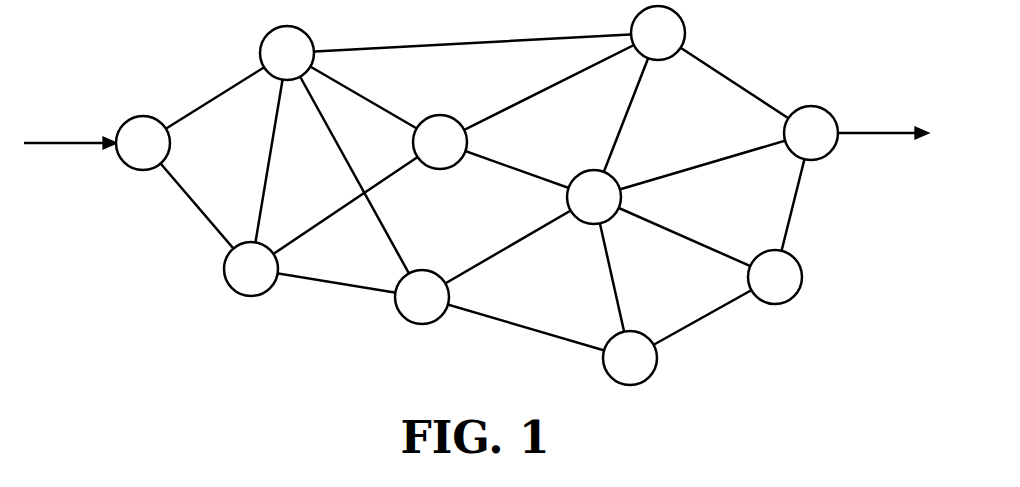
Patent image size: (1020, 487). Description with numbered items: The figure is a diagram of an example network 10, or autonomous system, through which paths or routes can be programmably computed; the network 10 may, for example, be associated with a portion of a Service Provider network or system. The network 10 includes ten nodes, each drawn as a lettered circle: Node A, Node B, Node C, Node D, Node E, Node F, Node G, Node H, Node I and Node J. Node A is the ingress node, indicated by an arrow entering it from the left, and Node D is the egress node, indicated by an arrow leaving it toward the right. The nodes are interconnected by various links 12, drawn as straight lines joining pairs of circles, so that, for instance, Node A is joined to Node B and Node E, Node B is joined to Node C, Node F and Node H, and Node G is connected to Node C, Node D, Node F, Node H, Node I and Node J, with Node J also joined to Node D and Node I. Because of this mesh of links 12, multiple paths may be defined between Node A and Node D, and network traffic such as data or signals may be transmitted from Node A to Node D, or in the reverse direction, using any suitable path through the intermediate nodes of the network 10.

The network 10 is at (145, 295).
The links 12 is at (211, 103).
The Node A is at (143, 143).
The Node B is at (287, 53).
The Node C is at (658, 33).
The Node D is at (811, 133).
The Node E is at (251, 269).
The Node F is at (440, 142).
The Node G is at (594, 197).
The Node H is at (422, 297).
The Node I is at (630, 358).
The Node J is at (775, 277).